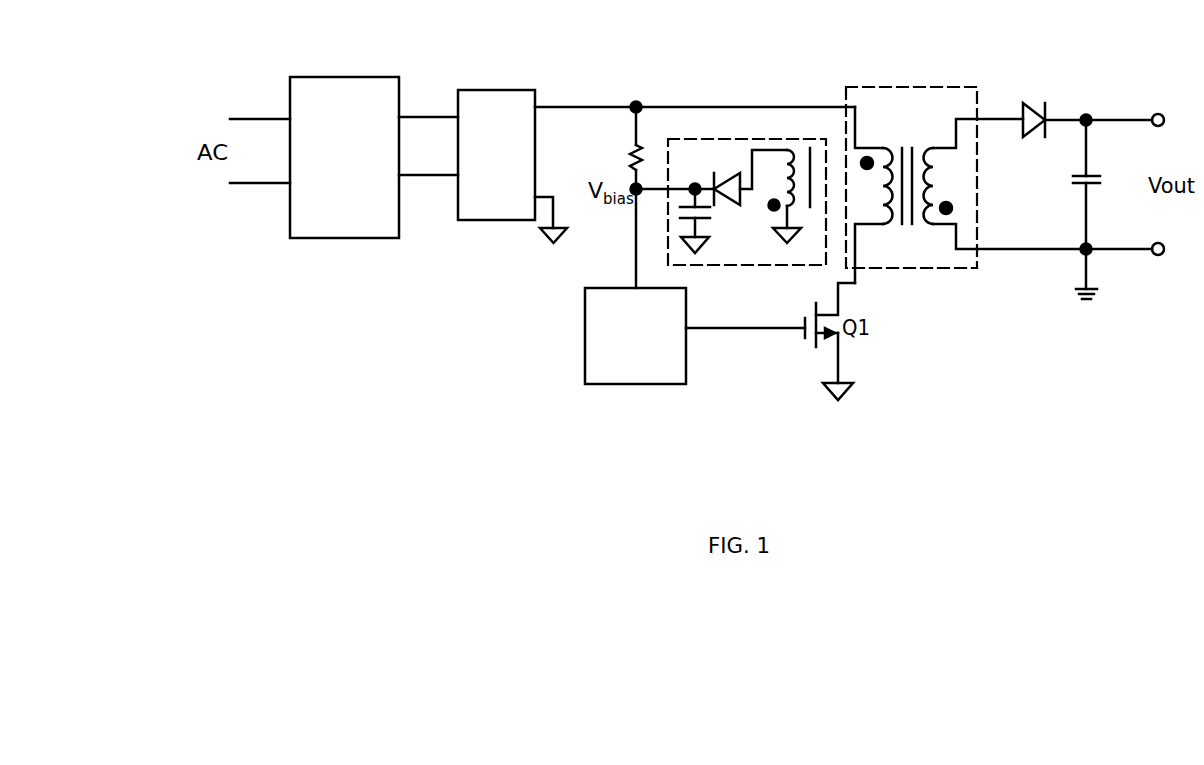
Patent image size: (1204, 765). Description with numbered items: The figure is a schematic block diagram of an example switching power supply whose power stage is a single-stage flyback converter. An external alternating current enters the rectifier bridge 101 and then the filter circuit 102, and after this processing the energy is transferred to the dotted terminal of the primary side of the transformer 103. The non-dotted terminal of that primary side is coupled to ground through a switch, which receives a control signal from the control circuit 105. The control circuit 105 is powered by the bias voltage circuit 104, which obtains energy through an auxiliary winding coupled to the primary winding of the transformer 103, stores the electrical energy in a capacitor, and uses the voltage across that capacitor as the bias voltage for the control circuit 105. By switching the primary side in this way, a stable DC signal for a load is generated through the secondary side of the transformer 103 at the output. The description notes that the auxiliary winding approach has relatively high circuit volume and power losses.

The rectifier bridge 101 is at (363, 197).
The filter circuit 102 is at (515, 197).
The transformer 103 is at (908, 87).
The bias voltage circuit 104 is at (723, 265).
The control circuit 105 is at (653, 377).